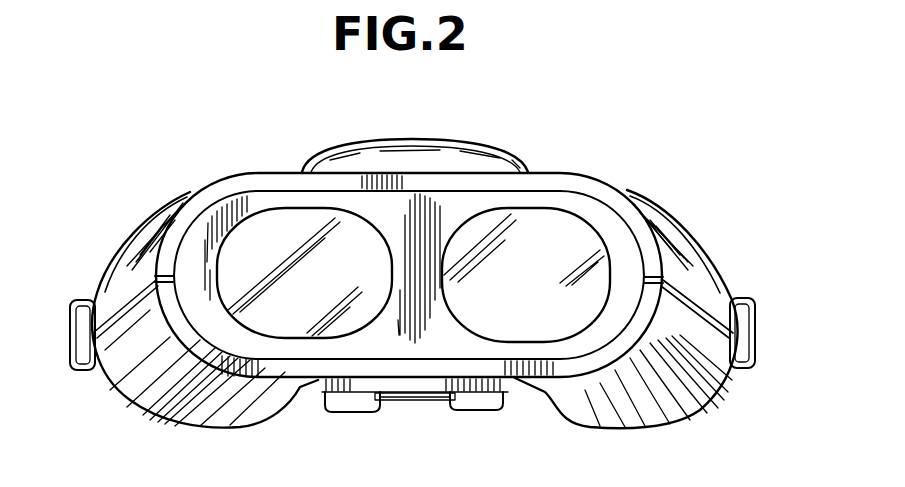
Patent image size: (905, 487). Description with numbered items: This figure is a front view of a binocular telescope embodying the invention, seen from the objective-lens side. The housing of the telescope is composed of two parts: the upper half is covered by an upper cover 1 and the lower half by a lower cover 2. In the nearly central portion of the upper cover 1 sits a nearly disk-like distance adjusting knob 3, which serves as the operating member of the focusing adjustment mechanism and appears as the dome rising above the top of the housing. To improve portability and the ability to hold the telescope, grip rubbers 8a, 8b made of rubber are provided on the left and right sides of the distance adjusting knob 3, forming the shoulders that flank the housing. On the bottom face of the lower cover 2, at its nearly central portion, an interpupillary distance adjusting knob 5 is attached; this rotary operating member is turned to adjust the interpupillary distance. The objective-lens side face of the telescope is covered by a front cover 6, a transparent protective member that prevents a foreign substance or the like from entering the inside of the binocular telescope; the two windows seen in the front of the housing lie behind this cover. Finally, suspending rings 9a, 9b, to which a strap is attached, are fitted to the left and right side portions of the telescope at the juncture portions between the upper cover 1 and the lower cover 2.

The upper cover 1 is at (712, 282).
The lower cover 2 is at (687, 420).
The distance adjusting knob 3 is at (458, 150).
The interpupillary distance adjusting knob 5 is at (477, 402).
The front cover 6 is at (477, 203).
The grip rubber 8a is at (133, 238).
The grip rubber 8b is at (700, 240).
The suspending ring 9a is at (78, 370).
The suspending ring 9b is at (757, 342).